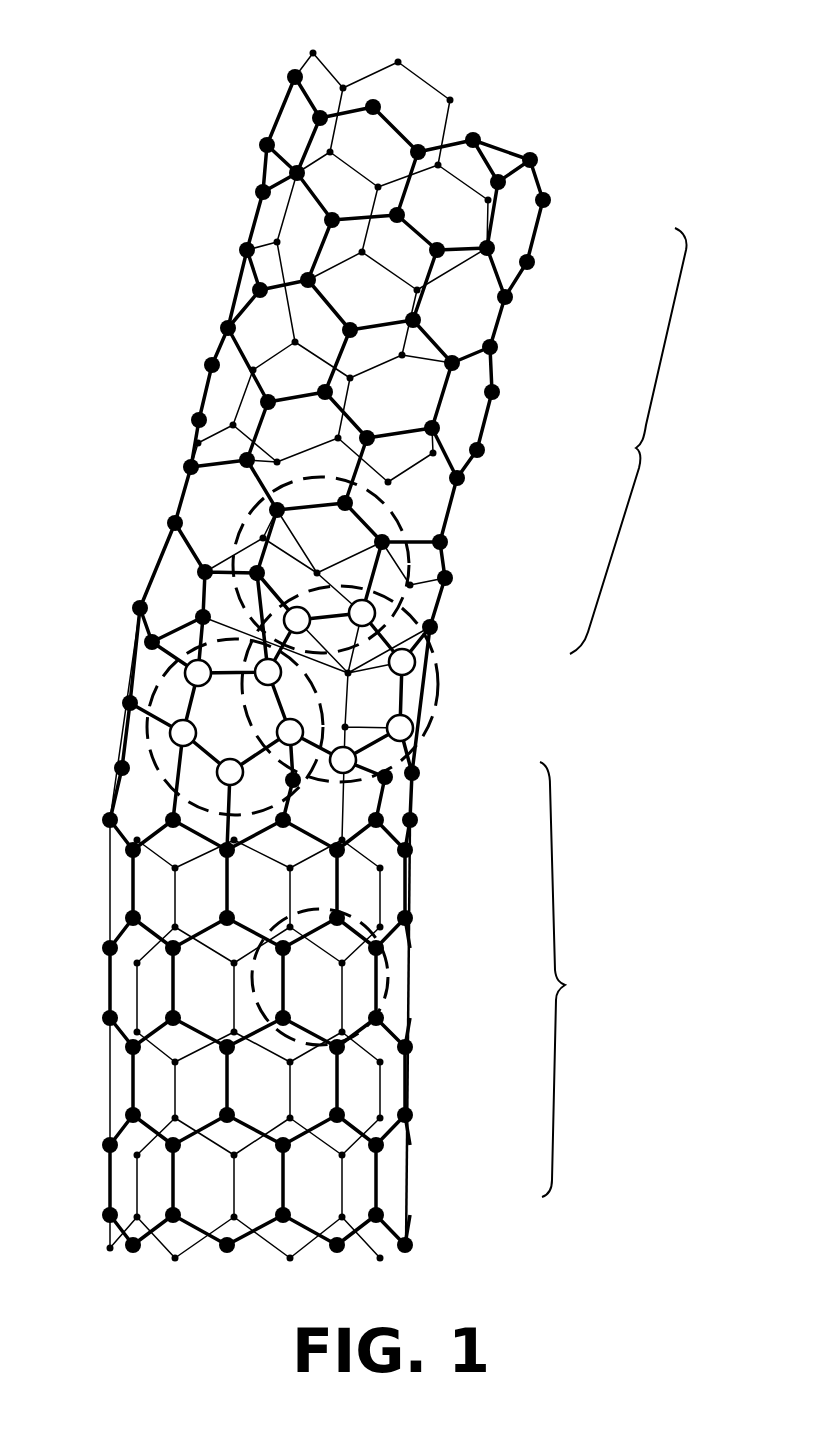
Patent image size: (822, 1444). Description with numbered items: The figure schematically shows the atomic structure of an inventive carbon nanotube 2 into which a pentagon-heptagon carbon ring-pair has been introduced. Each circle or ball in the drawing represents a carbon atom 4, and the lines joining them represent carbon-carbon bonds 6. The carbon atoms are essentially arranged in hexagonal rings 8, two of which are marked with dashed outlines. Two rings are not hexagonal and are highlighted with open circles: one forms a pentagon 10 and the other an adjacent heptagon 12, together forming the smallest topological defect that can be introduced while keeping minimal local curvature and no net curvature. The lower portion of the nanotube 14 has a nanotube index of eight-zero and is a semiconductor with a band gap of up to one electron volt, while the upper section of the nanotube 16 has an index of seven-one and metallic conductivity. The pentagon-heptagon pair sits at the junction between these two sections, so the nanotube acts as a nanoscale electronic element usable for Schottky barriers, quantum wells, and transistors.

The carbon nanotube 2 is at (115, 328).
The carbon atom 4 is at (417, 661).
The carbon-carbon bond 6 is at (540, 180).
The hexagonal ring 8 is at (408, 526).
The pentagon 10 is at (153, 737).
The heptagon 12 is at (442, 704).
The lower portion of the nanotube 14 is at (362, 1012).
The upper section of the nanotube 16 is at (405, 450).